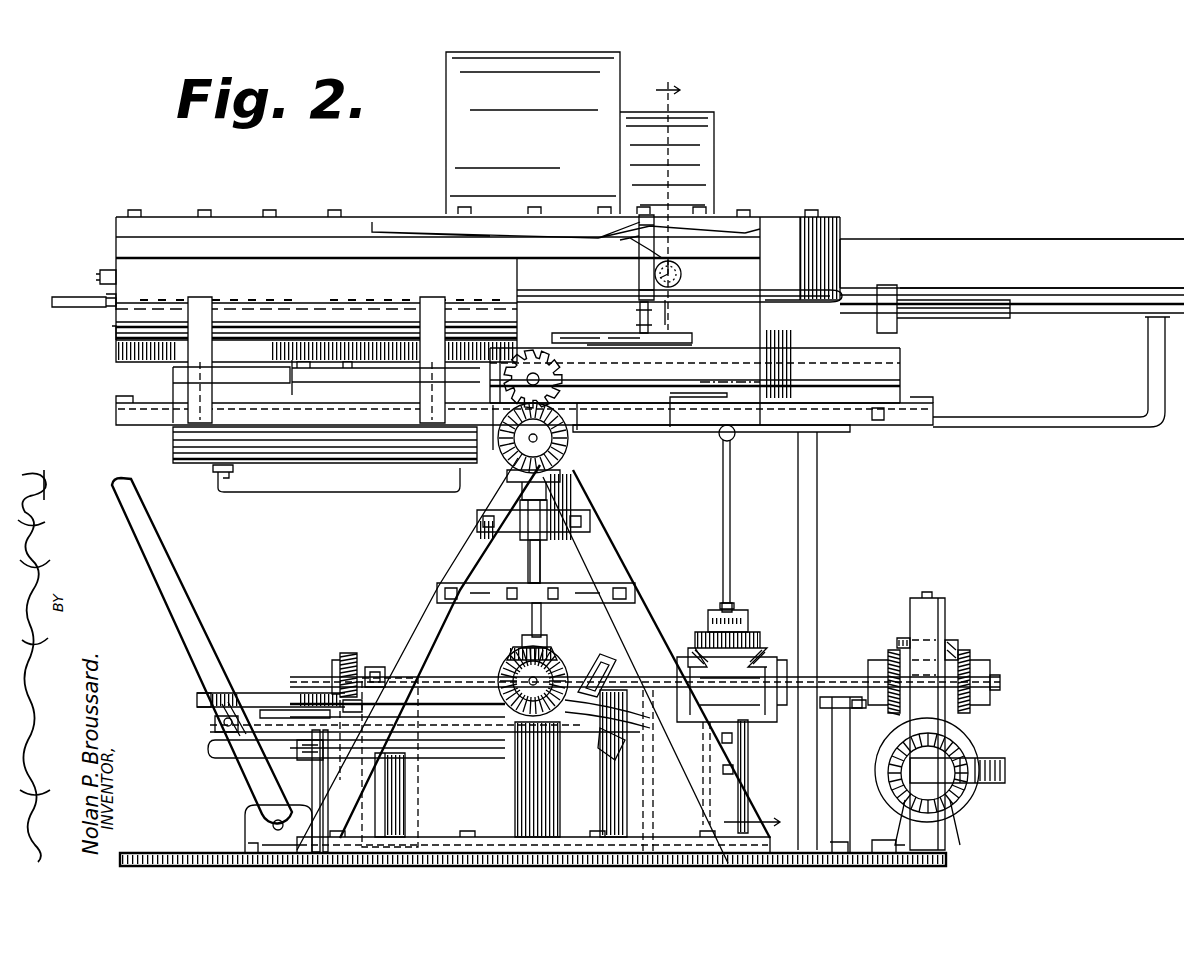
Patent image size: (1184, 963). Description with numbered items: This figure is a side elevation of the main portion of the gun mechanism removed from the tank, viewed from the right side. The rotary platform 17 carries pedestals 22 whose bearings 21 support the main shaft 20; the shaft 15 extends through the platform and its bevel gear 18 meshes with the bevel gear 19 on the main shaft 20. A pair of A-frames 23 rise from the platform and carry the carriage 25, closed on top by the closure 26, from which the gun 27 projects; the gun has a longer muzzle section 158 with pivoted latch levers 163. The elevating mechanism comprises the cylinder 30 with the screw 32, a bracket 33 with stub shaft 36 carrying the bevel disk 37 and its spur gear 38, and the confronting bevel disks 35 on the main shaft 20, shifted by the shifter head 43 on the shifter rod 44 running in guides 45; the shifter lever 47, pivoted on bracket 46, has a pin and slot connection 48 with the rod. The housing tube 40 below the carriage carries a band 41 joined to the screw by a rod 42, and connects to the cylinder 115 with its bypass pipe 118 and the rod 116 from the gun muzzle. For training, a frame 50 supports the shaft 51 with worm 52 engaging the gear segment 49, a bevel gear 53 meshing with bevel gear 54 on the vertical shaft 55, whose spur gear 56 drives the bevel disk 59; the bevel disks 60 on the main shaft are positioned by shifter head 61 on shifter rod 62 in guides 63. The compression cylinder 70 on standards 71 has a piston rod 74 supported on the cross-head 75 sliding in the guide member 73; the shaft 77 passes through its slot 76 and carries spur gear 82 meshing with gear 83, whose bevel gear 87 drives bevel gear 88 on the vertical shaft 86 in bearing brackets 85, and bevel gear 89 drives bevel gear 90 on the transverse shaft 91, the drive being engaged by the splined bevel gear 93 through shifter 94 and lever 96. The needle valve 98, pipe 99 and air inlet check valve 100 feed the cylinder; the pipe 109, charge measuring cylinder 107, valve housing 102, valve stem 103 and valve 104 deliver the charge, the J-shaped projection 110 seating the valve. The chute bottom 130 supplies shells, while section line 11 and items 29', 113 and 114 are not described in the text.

The section line 11 is at (721, 441).
The shaft 15 is at (318, 774).
The rotary platform 17 is at (440, 855).
The bevel gear 18 is at (300, 708).
The bevel gear 19 is at (340, 658).
The main shaft 20 is at (468, 680).
The bearings 21 is at (378, 667).
The pedestals 22 is at (376, 796).
The A-frames 23 is at (612, 562).
The carriage 25 is at (800, 250).
The closure 26 is at (301, 218).
The gun 27 is at (1062, 256).
The post 29' is at (772, 776).
The cylinder or housing 30 is at (712, 826).
The screw 32 is at (736, 600).
The bracket 33 is at (740, 610).
The bevel disks 35 is at (762, 656).
The stub shaft 36 is at (718, 615).
The bevel disk 37 is at (762, 722).
The spur gear 38 is at (680, 710).
The housing tube 40 is at (772, 438).
The band 41 is at (720, 438).
The rod 42 is at (732, 521).
The shifter head 43 is at (718, 722).
The shifter rod 44 is at (455, 720).
The guides 45 is at (345, 705).
The bracket 46 is at (250, 826).
The shifter lever 47 is at (258, 778).
The pin and slot connection 48 is at (232, 734).
The arcuate gear segment 49 is at (1006, 774).
The frame 50 is at (920, 614).
The shaft 51 is at (892, 790).
The worm 52 is at (972, 746).
The bevel gear 53 is at (956, 795).
The bevel gear 54 is at (948, 822).
The vertical shaft 55 is at (930, 594).
The spur gear 56 is at (955, 640).
The bevel disk 59 is at (960, 655).
The bevel disks 60 is at (888, 660).
The shifter head 61 is at (990, 720).
The shifter rod 62 is at (236, 698).
The guides 63 is at (840, 698).
The compression cylinder 70 is at (316, 289).
The standards 71 is at (440, 310).
The guide member 73 is at (311, 420).
The piston rod 74 is at (741, 290).
The cross-head 75 is at (878, 322).
The slot 76 is at (694, 382).
The shaft 77 is at (565, 398).
The spur gear 82 is at (536, 368).
The gear 83 is at (565, 447).
The bearing brackets 85 is at (555, 520).
The vertical shaft 86 is at (530, 559).
The bevel gear 87 is at (520, 443).
The bevel gear 88 is at (546, 490).
The bevel gear 89 is at (516, 662).
The bevel gear 90 is at (531, 718).
The transverse shaft 91 is at (540, 683).
The bevel gear 93 is at (535, 638).
The shifter 94 is at (620, 748).
The lever 96 is at (534, 779).
The needle valve 98 is at (112, 310).
The pipe 99 is at (66, 306).
The air inlet check valve 100 is at (116, 340).
The valve housing 102 is at (660, 270).
The valve stem 103 is at (678, 272).
The valve 104 is at (665, 319).
The charge measuring cylinder 107 is at (538, 268).
The pipe 109 is at (100, 277).
The J-shaped projection 110 is at (935, 325).
The plate 113 is at (668, 333).
The plate 114 is at (606, 346).
The cylinder 115 is at (180, 440).
The rod 116 is at (1040, 428).
The bypass pipe 118 is at (382, 492).
The chute bottom 130 is at (446, 202).
The muzzle section 158 is at (960, 250).
The latch levers 163 is at (620, 230).